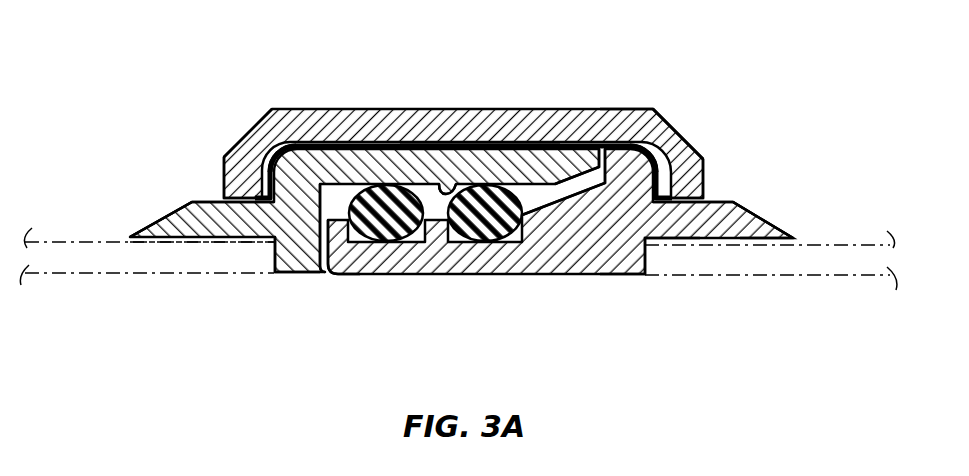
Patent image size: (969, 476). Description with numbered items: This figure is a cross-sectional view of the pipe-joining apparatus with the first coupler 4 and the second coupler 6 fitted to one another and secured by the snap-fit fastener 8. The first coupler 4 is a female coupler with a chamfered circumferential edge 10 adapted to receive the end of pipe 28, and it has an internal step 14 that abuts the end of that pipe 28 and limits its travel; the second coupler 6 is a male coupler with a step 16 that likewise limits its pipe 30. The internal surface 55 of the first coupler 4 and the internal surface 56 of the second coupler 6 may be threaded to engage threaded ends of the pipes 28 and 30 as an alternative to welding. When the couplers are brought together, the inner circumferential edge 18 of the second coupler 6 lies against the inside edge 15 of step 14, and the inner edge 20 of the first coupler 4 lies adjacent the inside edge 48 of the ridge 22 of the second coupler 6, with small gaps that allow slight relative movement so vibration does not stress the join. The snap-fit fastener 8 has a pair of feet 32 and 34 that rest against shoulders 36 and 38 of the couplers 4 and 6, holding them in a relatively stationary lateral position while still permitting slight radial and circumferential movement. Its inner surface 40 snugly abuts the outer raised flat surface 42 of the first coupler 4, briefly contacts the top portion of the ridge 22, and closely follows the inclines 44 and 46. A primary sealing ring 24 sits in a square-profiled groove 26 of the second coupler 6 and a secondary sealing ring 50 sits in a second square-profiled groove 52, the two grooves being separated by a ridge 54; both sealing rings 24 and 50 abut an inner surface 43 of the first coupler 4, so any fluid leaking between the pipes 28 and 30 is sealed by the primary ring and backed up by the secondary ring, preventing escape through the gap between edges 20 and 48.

The first coupler 4 is at (247, 217).
The second coupler 6 is at (622, 213).
The snap-fit fastener 8 is at (409, 122).
The chamfered circumferential edge 10 is at (163, 216).
The internal step 14 is at (295, 248).
The inside edge of step 15 is at (319, 275).
The step 16 is at (658, 243).
The inner circumferential edge 18 is at (334, 273).
The inner edge 20 is at (588, 170).
The ridge 22 is at (667, 140).
The primary sealing ring 24 is at (381, 243).
The groove 26 is at (412, 245).
The pipe 28 is at (85, 255).
The pipe 30 is at (782, 262).
The foot 32 is at (243, 177).
The foot 34 is at (690, 178).
The shoulder 36 is at (213, 200).
The shoulder 38 is at (727, 202).
The inner surface 40 is at (288, 157).
The outer raised flat surface 42 is at (370, 142).
The inner surface 43 is at (482, 182).
The incline 44 is at (270, 165).
The incline 46 is at (672, 166).
The inside edge of ridge 48 is at (583, 182).
The secondary sealing ring 50 is at (475, 243).
The groove 52 is at (505, 245).
The ridge 54 is at (441, 183).
The internal surface 55 is at (183, 240).
The internal surface 56 is at (719, 243).